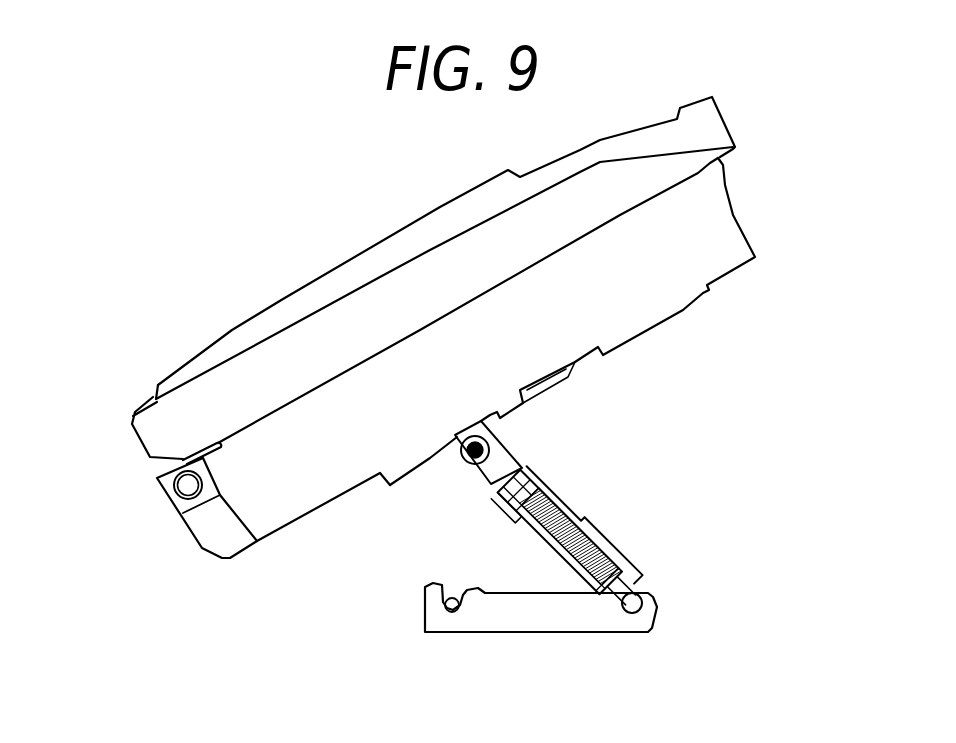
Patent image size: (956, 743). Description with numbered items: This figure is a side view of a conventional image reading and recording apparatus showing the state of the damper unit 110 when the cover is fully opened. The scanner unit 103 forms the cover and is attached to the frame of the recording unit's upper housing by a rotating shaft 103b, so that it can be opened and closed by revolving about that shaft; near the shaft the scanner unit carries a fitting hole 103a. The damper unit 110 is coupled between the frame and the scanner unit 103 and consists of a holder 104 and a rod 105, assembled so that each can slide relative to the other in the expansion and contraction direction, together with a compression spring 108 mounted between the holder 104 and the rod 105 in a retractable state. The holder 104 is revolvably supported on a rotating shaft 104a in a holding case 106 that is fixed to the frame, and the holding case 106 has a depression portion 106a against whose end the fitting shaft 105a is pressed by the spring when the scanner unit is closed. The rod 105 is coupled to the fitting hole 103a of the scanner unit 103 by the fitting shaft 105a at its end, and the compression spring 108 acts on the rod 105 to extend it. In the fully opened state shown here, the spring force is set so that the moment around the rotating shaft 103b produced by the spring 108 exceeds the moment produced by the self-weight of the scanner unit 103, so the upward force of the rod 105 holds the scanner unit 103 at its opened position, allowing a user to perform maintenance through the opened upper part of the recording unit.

The scanner unit 103 is at (380, 432).
The fitting hole 103a is at (440, 462).
The rotating shaft 103b is at (184, 484).
The holder 104 is at (543, 487).
The rotating shaft 104a is at (641, 607).
The rod 105 is at (513, 460).
The fitting shaft 105a is at (462, 458).
The holding case 106 is at (532, 615).
The depression portion 106a is at (453, 612).
The compression spring 108 is at (532, 531).
The damper unit 110 is at (603, 538).